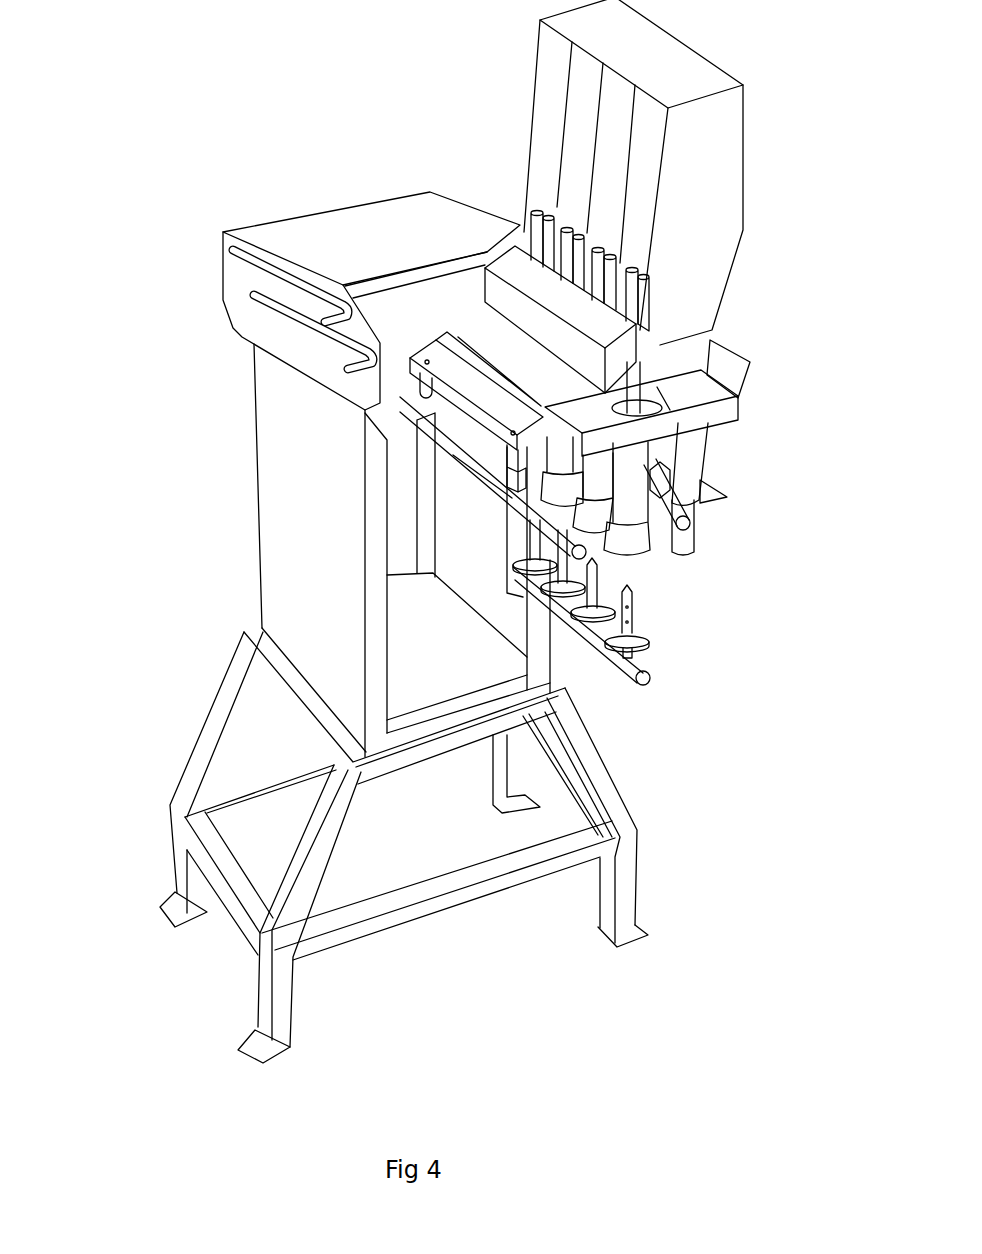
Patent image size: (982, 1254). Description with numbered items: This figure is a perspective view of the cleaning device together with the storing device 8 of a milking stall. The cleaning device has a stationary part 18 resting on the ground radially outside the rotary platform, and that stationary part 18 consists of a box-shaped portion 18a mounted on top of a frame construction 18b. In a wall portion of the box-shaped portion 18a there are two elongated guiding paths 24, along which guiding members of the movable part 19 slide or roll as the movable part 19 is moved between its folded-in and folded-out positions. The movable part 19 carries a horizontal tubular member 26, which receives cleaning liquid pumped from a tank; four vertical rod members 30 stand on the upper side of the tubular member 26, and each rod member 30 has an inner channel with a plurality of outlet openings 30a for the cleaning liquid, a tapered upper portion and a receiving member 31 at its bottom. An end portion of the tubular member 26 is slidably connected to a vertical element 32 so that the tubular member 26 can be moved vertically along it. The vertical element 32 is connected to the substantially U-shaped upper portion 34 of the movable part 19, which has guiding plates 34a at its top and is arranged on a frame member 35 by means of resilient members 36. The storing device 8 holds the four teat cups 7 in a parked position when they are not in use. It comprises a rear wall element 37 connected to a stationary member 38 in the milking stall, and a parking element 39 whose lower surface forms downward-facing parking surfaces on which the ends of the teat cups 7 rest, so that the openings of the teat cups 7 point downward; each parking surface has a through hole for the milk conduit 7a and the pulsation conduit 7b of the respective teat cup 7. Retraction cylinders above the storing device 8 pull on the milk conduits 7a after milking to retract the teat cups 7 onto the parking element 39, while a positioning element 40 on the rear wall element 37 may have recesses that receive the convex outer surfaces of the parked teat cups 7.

The teat cup 7 is at (632, 535).
The milk conduit 7a is at (637, 270).
The pulsation conduit 7b is at (640, 290).
The storing device 8 is at (507, 133).
The stationary part 18 is at (357, 627).
The box-shaped portion 18a is at (330, 474).
The frame construction 18b is at (202, 747).
The movable part 19 is at (650, 668).
The guiding path 24 is at (250, 294).
The tubular member 26 is at (632, 672).
The rod member 30 is at (623, 617).
The outlet opening 30a is at (632, 610).
The receiving member 31 is at (630, 647).
The vertical element 32 is at (513, 528).
The upper portion 34 is at (460, 360).
The guiding plate 34a is at (472, 322).
The frame member 35 is at (428, 371).
The resilient member 36 is at (422, 388).
The rear wall element 37 is at (698, 450).
The stationary member 38 is at (683, 505).
The parking element 39 is at (692, 388).
The positioning element 40 is at (670, 480).